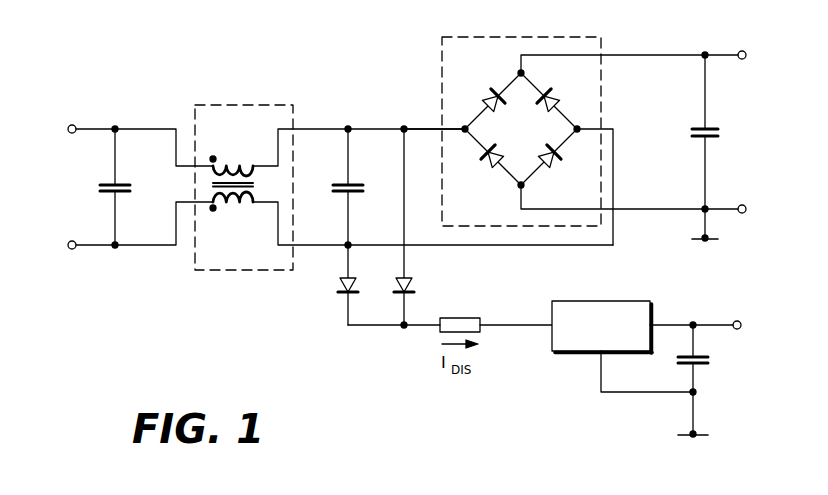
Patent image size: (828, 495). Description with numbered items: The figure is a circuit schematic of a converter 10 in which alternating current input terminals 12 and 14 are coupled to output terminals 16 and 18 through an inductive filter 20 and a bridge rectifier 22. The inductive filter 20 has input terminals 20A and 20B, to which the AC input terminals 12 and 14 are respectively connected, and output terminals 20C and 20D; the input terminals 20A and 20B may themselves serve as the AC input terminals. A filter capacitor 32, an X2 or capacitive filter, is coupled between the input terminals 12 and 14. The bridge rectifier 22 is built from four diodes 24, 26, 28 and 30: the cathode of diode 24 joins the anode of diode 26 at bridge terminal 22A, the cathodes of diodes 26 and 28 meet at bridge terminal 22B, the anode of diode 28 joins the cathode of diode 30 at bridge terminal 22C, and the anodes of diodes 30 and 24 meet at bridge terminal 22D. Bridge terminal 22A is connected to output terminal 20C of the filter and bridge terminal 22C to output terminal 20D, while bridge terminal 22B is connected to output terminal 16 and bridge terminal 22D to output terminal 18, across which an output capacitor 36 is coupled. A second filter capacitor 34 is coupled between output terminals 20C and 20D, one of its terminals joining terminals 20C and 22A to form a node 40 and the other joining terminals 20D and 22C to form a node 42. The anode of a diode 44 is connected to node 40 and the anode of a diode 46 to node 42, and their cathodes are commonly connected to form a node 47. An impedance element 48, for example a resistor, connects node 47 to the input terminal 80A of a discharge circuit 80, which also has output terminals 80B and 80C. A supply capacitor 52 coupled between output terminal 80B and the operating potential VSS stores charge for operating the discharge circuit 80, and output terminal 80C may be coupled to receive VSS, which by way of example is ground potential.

The converter 10 is at (223, 355).
The AC input terminal 12 is at (67, 128).
The AC input terminal 14 is at (67, 244).
The output terminal 16 is at (746, 53).
The output terminal 18 is at (746, 206).
The inductive filter 20 is at (232, 104).
The input terminal 20A is at (150, 128).
The input terminal 20B is at (148, 249).
The output terminal 20C is at (318, 128).
The output terminal 20D is at (318, 243).
The bridge rectifier 22 is at (521, 120).
The bridge terminal 22A is at (437, 127).
The bridge terminal 22B is at (612, 55).
The bridge terminal 22C is at (613, 129).
The bridge terminal 22D is at (630, 210).
The diode 24 is at (488, 164).
The diode 26 is at (488, 97).
The diode 28 is at (553, 97).
The diode 30 is at (553, 163).
The filter capacitor 32 is at (130, 185).
The filter capacitor 34 is at (363, 185).
The output capacitor 36 is at (718, 130).
The node 40 is at (376, 128).
The node 42 is at (376, 243).
The diode 44 is at (413, 285).
The diode 46 is at (339, 285).
The node 47 is at (403, 330).
The impedance element 48 is at (478, 298).
The supply capacitor 52 is at (700, 357).
The discharge circuit 80 is at (620, 301).
The input terminal 80A is at (543, 327).
The output terminal 80B is at (672, 325).
The output terminal 80C is at (601, 371).